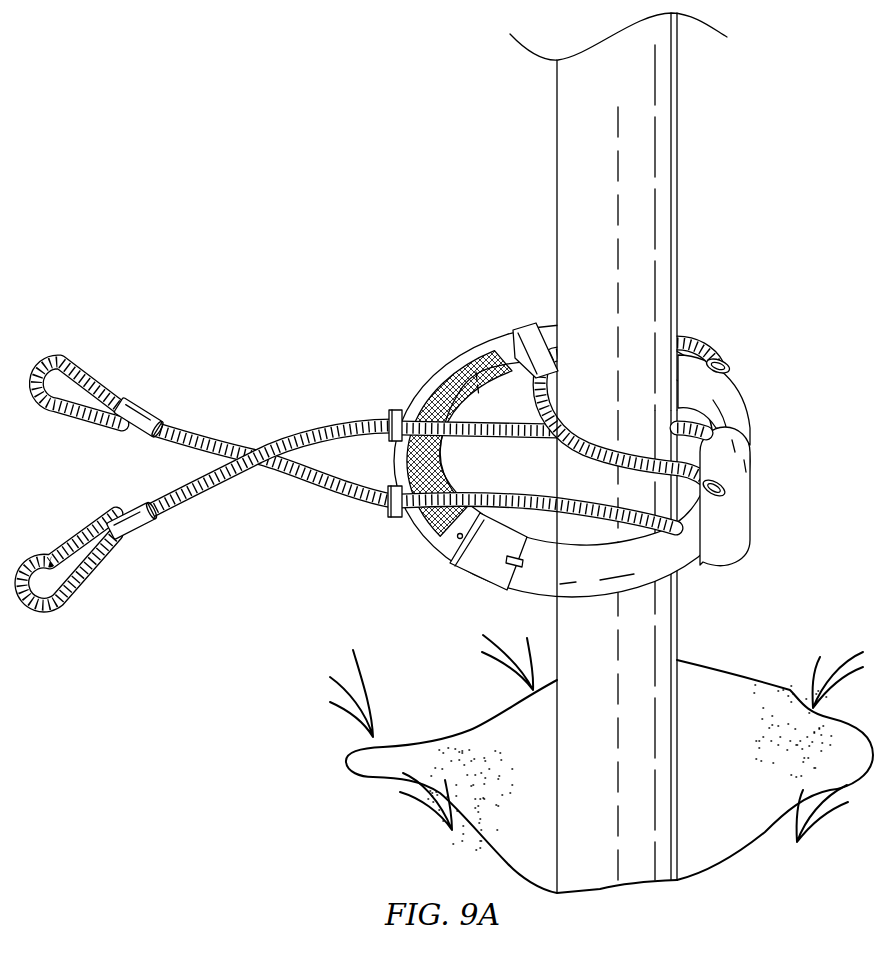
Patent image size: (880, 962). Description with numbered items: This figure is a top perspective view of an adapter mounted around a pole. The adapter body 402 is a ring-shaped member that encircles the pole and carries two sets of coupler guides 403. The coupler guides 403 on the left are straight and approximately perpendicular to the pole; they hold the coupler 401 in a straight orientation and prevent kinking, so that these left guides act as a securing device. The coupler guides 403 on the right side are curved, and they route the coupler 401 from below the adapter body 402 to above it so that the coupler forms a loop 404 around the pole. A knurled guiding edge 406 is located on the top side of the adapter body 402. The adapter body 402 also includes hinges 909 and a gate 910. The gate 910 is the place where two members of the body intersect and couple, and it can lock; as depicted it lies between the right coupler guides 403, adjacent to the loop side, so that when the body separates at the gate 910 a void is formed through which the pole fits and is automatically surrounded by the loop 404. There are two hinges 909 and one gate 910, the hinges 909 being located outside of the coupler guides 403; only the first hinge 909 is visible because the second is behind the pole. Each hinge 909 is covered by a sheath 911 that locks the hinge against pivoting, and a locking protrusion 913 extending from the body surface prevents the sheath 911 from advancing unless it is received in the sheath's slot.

The coupler 401 is at (143, 405).
The adapter body 402 is at (430, 543).
The coupler guides 403 is at (392, 411).
The loop 404 is at (535, 326).
The guiding edge 406 is at (436, 366).
The hinge 909 is at (548, 304).
The gate 910 is at (421, 479).
The sheath 911 is at (505, 453).
The locking protrusion 913 is at (524, 562).